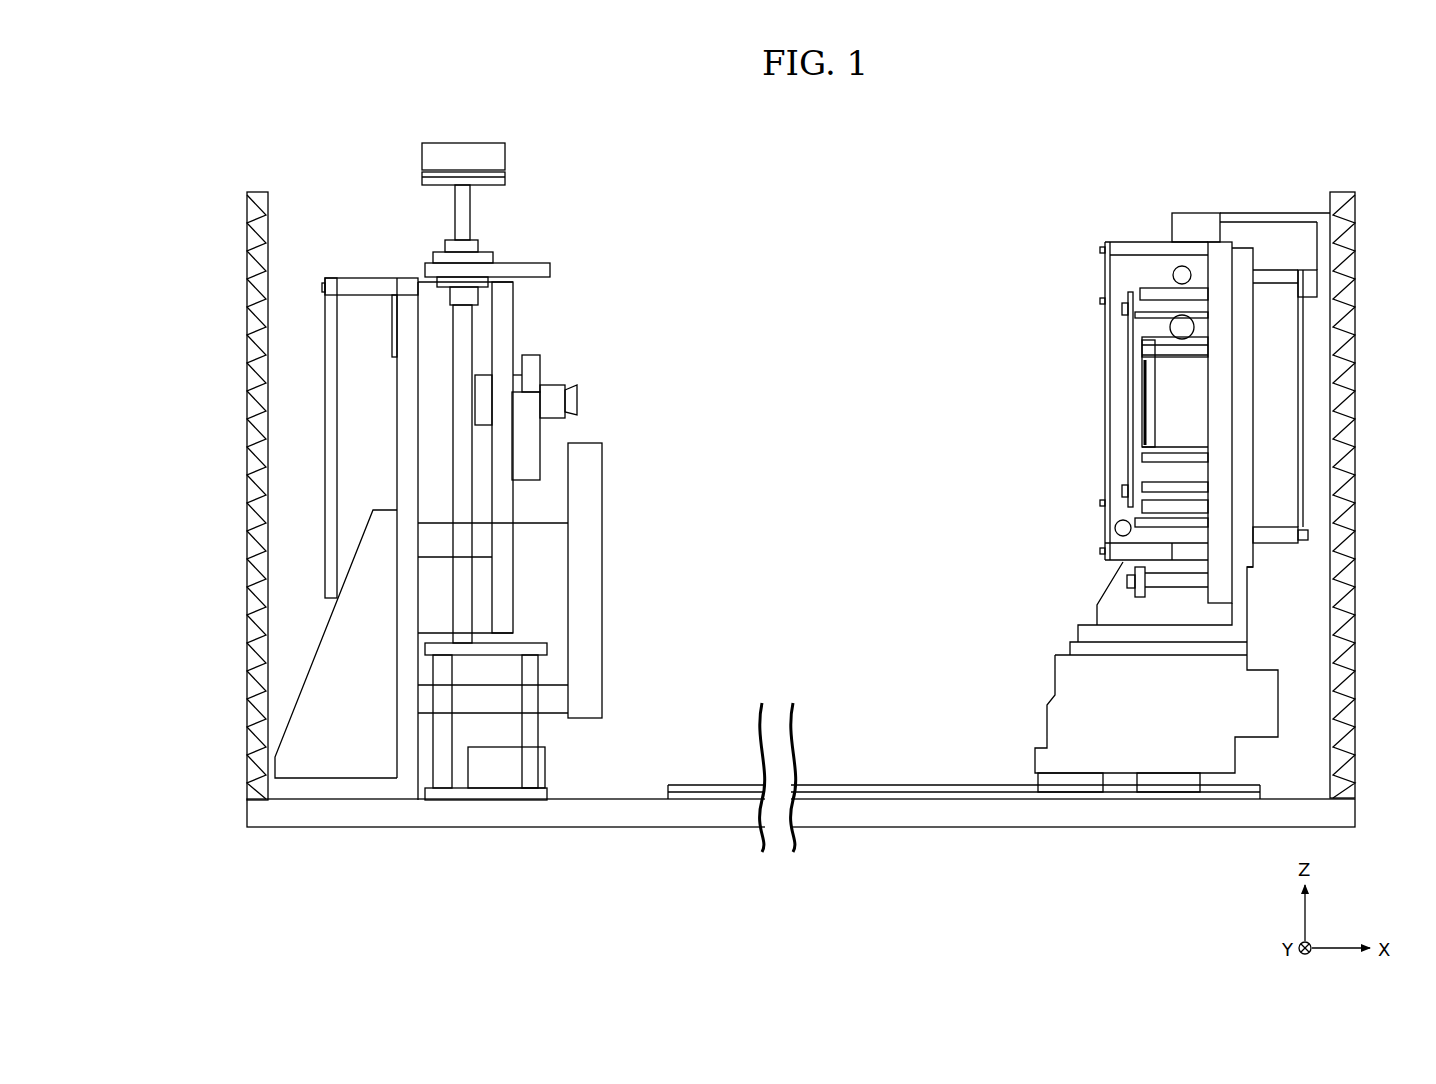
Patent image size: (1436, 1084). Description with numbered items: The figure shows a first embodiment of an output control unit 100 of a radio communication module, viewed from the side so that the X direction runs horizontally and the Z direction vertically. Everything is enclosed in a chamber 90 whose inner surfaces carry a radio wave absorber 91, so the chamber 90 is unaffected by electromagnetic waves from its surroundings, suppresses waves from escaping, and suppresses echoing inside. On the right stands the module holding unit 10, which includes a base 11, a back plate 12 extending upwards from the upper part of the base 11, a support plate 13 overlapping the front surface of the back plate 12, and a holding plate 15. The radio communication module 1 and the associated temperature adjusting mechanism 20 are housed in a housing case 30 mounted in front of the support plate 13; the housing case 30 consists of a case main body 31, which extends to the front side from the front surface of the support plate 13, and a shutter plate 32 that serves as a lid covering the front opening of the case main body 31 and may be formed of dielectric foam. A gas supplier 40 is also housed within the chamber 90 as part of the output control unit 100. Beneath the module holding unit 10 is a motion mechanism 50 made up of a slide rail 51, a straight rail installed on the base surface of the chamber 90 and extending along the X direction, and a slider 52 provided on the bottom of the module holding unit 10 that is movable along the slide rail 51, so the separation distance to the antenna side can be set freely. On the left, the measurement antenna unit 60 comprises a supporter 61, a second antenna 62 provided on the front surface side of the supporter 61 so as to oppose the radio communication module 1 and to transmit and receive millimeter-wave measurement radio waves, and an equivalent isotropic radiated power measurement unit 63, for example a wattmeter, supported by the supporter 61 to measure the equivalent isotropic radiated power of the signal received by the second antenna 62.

The output control unit 100 is at (828, 240).
The module holding unit 10 is at (1299, 186).
The base 11 is at (1105, 707).
The back plate 12 is at (1243, 335).
The support plate 13 is at (1222, 250).
The holding plate 15 is at (1130, 462).
The radio communication module 1 is at (1127, 365).
The temperature adjusting mechanism 20 is at (1216, 408).
The housing case 30 is at (992, 243).
The case main body 31 is at (1128, 247).
The shutter plate 32 is at (1105, 315).
The gas supplier 40 is at (1112, 527).
The motion mechanism 50 is at (953, 762).
The slide rail 51 is at (862, 785).
The slider 52 is at (1163, 792).
The measurement antenna unit 60 is at (522, 204).
The supporter 61 is at (300, 728).
The second antenna 62 is at (572, 390).
The equivalent isotropic radiated power measurement unit 63 is at (487, 383).
The chamber 90 is at (244, 657).
The radio wave absorber 91 is at (252, 566).